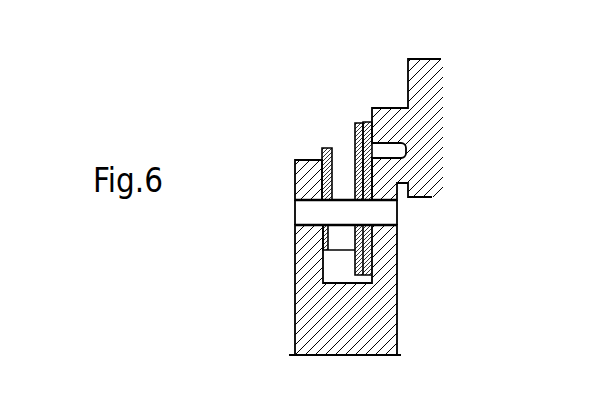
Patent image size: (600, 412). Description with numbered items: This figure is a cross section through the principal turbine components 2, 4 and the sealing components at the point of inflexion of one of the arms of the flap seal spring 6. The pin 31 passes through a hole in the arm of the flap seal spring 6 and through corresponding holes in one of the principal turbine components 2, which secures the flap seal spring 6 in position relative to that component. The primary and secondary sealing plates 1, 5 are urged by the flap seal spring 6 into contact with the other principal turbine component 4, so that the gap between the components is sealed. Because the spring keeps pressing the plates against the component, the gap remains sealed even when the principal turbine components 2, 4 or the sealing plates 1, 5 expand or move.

The primary sealing plate 1 is at (366, 122).
The principal turbine component 2 is at (310, 307).
The principal turbine component 4 is at (390, 128).
The secondary sealing plate 5 is at (353, 128).
The flap seal spring 6 is at (326, 151).
The pin 31 is at (343, 213).